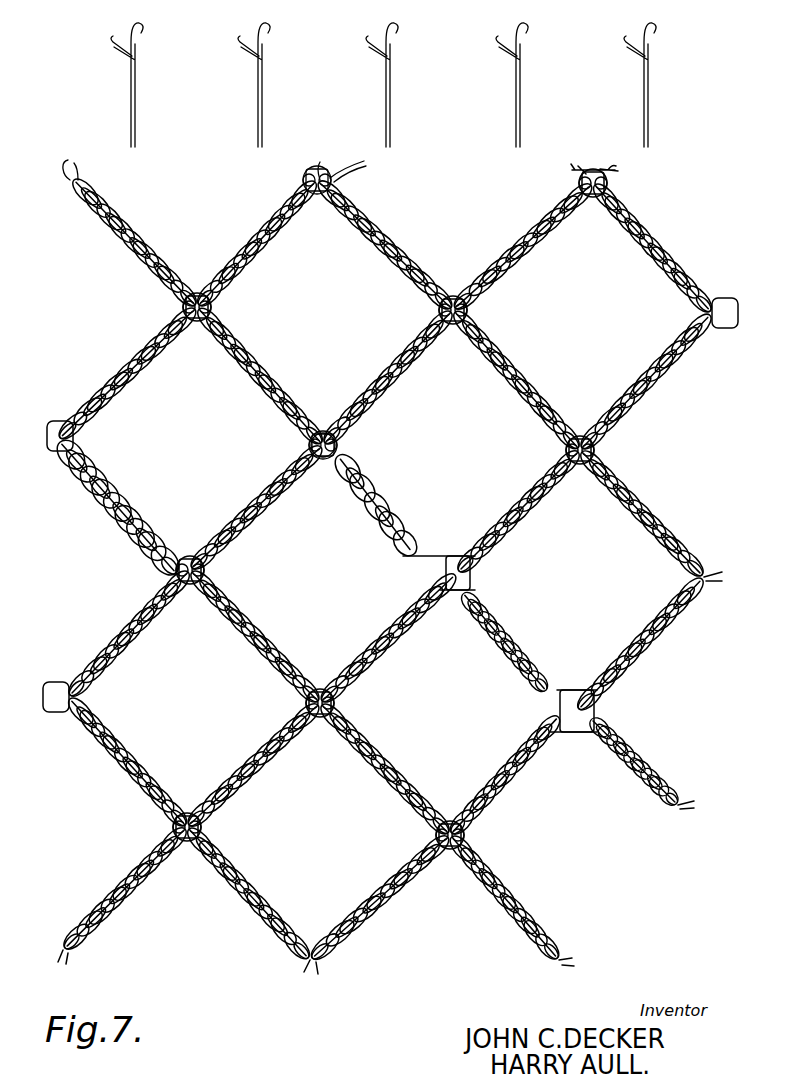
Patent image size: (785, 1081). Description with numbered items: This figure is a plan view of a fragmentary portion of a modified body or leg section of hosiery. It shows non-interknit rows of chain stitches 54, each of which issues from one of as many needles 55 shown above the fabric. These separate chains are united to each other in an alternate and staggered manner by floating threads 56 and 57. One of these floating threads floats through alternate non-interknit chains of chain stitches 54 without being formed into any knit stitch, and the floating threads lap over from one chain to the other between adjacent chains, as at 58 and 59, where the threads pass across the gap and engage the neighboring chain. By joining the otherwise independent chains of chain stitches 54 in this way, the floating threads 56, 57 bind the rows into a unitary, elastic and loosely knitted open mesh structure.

The non-interknit rows of chain stitches 54 is at (67, 168).
The needles 55 is at (138, 80).
The floating thread 56 is at (78, 170).
The floating thread 57 is at (306, 173).
The lap-over point 58 is at (325, 423).
The lap-over point 59 is at (331, 420).